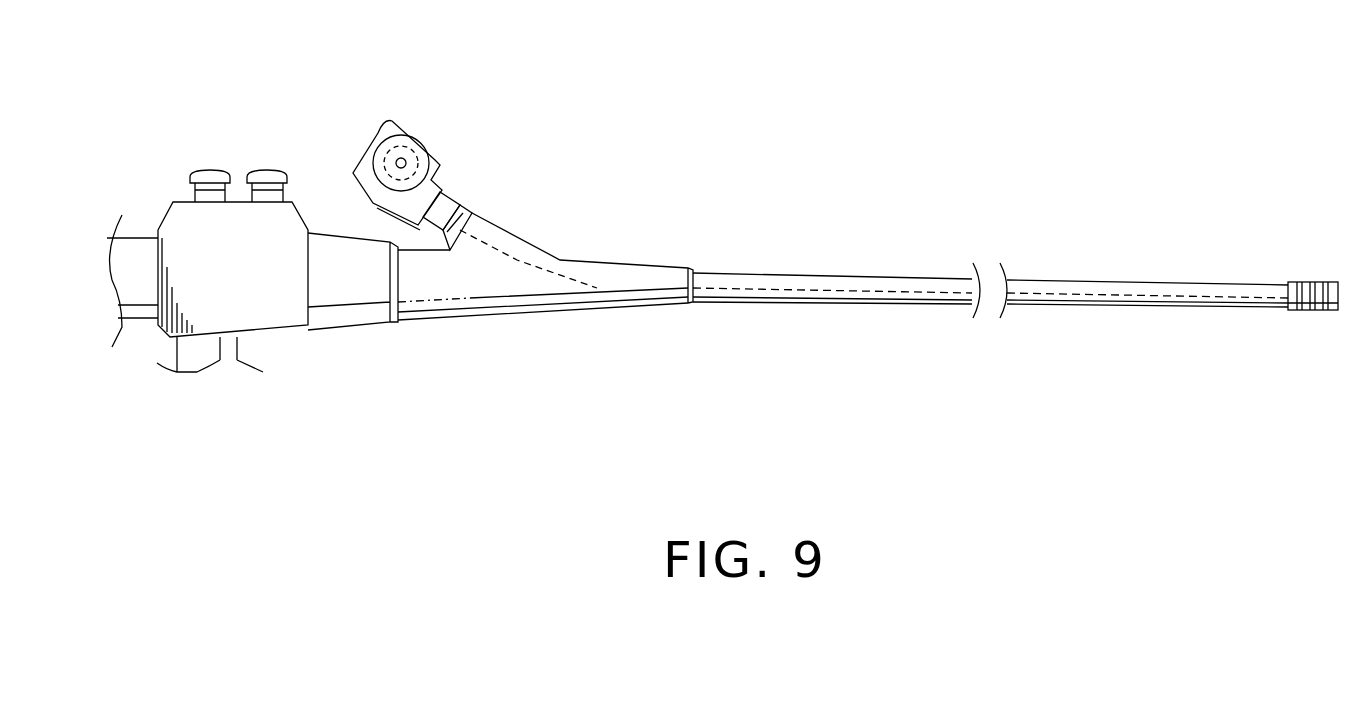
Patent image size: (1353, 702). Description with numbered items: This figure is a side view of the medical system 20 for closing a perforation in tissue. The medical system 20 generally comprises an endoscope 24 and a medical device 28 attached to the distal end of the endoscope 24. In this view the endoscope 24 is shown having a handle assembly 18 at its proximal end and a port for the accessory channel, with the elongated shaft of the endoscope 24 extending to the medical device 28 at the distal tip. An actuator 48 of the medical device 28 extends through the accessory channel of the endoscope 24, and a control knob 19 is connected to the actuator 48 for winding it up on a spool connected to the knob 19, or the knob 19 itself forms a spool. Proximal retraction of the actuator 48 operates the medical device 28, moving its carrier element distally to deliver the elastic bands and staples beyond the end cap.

The handle assembly 18 is at (319, 358).
The control knob 19 is at (380, 137).
The medical system 20 is at (702, 126).
The endoscope 24 is at (807, 278).
The medical device 28 is at (1302, 254).
The actuator 48 is at (517, 260).